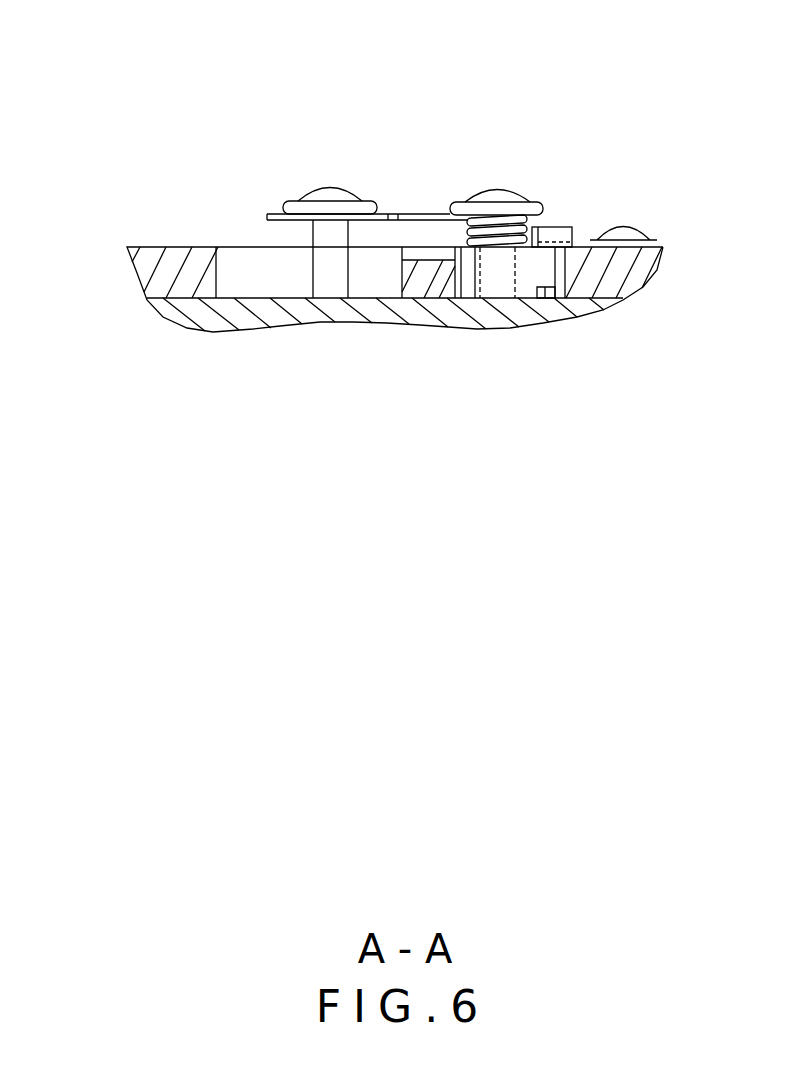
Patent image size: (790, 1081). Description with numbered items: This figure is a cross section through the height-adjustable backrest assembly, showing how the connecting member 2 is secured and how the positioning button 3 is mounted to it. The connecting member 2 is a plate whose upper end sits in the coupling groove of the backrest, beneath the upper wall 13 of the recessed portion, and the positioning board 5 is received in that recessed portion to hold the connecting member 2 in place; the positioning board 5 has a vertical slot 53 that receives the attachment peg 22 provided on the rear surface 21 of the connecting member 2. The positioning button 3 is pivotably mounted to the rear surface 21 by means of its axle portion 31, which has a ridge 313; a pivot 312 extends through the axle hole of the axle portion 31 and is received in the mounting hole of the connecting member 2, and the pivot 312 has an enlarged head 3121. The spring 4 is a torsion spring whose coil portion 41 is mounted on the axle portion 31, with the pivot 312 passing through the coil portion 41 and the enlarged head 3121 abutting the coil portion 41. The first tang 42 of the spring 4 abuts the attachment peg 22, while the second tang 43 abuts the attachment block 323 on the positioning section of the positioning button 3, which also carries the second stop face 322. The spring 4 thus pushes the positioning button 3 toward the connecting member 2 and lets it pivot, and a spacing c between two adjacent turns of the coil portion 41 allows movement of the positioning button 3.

The positioning board 5 is at (187, 280).
The upper wall 13 is at (232, 267).
The slot 53 is at (269, 277).
The connecting member 2 is at (400, 225).
The rear surface 21 is at (298, 200).
The attachment peg 22 is at (335, 260).
The spring 4 is at (367, 137).
The first tang 42 is at (393, 225).
The coil portion 41 is at (493, 240).
The spacing c is at (465, 248).
The positioning button 3 is at (541, 234).
The axle portion 31 is at (517, 347).
The pivot 312 is at (502, 280).
The enlarged head 3121 is at (545, 241).
The ridge 313 is at (472, 272).
The second stop face 322 is at (545, 287).
The attachment block 323 is at (565, 245).
The second tang 43 is at (543, 134).